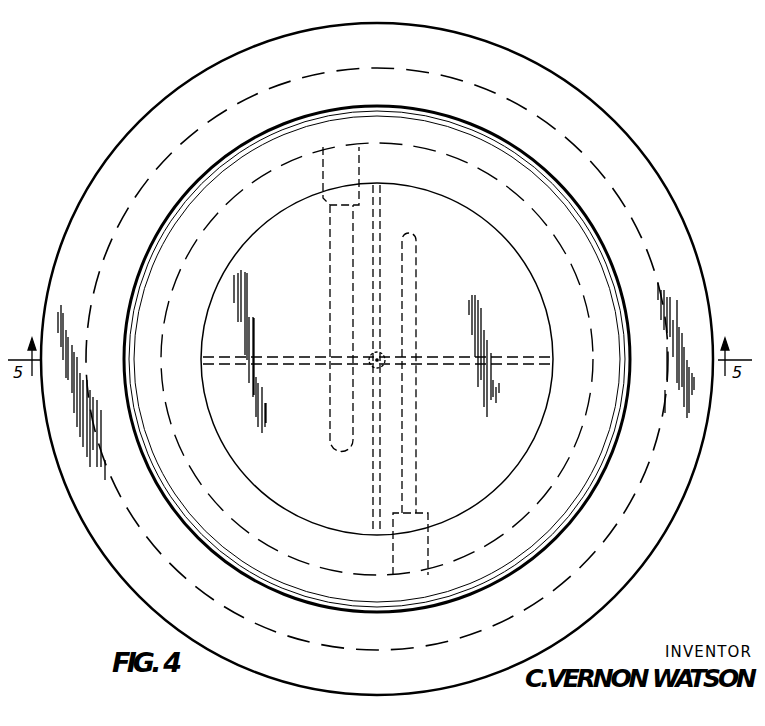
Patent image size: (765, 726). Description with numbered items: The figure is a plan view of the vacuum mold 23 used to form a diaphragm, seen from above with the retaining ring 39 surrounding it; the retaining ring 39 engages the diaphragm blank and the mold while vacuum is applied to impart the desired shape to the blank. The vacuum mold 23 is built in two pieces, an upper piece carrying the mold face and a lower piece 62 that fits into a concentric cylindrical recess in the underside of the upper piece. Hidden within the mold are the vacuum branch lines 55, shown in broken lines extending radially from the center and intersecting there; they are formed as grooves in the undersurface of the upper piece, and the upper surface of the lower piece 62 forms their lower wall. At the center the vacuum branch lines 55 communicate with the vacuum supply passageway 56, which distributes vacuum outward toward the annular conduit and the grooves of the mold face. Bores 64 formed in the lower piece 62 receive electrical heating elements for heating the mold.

The retaining ring 39 is at (380, 50).
The vacuum mold 23 is at (431, 73).
The lower piece 62 is at (382, 147).
The bores 64 is at (340, 279).
The vacuum branch lines 55 is at (386, 234).
The vacuum supply passageway 56 is at (382, 351).